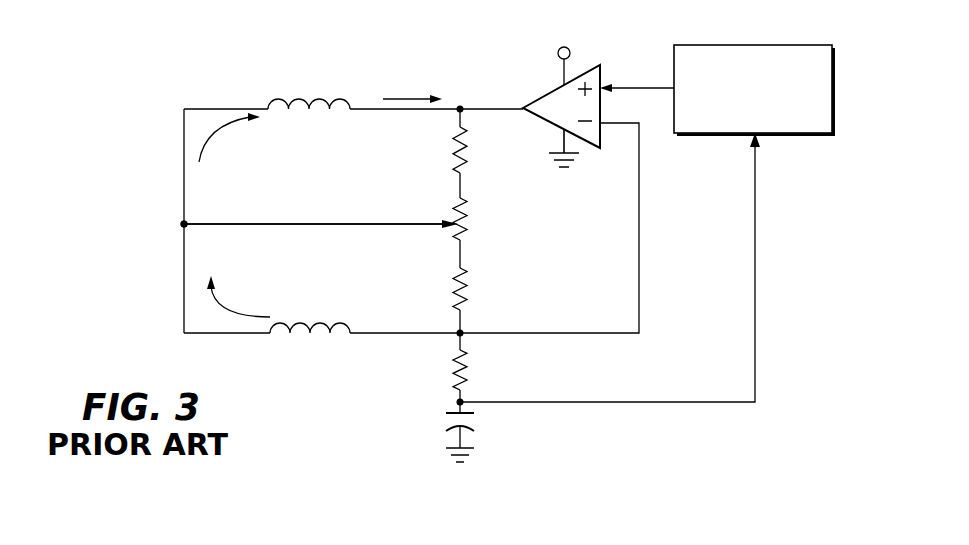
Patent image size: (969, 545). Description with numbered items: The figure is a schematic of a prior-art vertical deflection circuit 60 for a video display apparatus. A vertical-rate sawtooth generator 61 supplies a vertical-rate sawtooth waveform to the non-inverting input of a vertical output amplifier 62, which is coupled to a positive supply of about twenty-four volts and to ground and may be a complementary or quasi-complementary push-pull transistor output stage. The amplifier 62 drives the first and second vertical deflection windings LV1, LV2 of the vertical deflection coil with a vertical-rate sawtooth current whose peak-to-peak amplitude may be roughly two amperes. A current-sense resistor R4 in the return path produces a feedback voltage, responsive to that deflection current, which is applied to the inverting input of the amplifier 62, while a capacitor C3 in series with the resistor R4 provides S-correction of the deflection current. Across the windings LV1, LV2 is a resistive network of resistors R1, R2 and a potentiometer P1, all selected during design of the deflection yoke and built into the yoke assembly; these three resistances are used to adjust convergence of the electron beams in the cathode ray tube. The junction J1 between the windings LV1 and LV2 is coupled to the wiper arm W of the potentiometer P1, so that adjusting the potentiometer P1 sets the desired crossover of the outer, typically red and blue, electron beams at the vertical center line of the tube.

The vertical deflection output stage 60 is at (428, 55).
The vertical-rate sawtooth generator 61 is at (770, 50).
The vertical output amplifier 62 is at (536, 98).
The first vertical deflection winding LV1 is at (274, 115).
The second vertical deflection winding LV2 is at (278, 323).
The junction J1 is at (183, 226).
The wiper arm W is at (418, 223).
The resistor R1 is at (478, 150).
The potentiometer P1 is at (478, 219).
The resistor R2 is at (479, 289).
The current-sense resistor R4 is at (479, 370).
The capacitor C3 is at (479, 437).